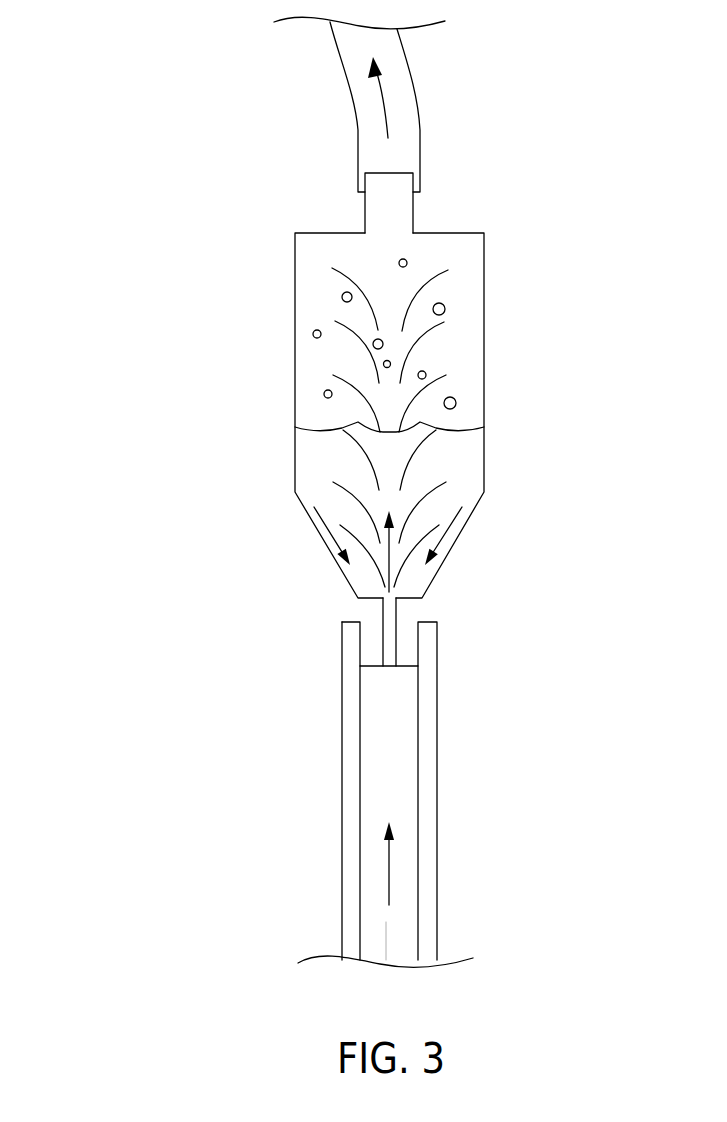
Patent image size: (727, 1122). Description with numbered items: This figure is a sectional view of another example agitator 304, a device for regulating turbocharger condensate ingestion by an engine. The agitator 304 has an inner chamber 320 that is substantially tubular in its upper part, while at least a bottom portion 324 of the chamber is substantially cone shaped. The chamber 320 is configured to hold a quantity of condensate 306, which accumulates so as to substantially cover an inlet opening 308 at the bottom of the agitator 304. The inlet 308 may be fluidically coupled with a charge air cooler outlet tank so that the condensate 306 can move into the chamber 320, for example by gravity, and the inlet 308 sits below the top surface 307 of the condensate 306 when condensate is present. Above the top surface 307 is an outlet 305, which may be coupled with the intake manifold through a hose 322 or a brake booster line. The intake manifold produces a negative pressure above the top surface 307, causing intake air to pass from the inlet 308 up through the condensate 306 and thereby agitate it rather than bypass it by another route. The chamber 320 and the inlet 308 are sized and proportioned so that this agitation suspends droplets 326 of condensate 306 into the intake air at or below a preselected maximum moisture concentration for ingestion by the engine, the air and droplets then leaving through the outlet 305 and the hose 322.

The agitator 304 is at (136, 120).
The hose 322 is at (352, 92).
The outlet 305 is at (392, 242).
The droplets 326 is at (324, 392).
The inner chamber 320 is at (472, 343).
The top surface 307 is at (448, 431).
The bottom portion 324 is at (322, 539).
The condensate 306 is at (443, 508).
The inlet opening 308 is at (388, 602).